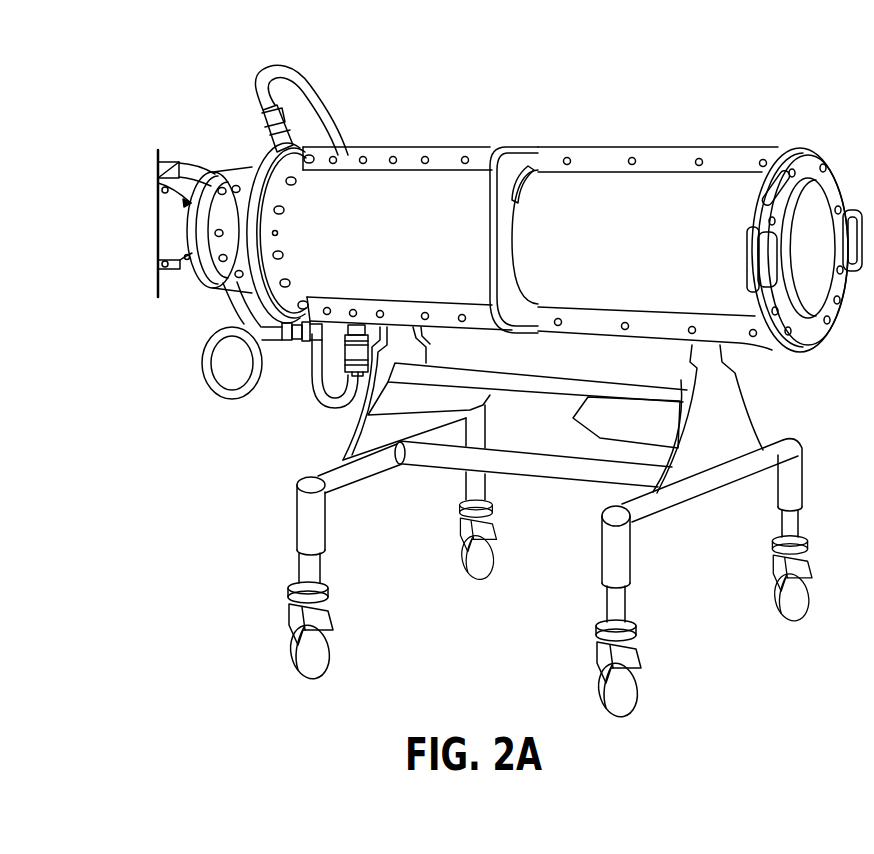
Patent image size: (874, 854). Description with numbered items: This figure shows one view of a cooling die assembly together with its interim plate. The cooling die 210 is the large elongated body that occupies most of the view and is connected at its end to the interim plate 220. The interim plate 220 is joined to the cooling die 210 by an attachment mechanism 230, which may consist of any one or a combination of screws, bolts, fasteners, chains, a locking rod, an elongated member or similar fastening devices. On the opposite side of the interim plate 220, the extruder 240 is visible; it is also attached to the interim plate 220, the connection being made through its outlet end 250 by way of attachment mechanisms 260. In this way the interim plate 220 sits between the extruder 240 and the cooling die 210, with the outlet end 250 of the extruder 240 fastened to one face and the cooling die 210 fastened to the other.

The cooling die 210 is at (692, 196).
The interim plate 220 is at (247, 192).
The attachment mechanism 230 is at (306, 181).
The extruder 240 is at (173, 220).
The outlet end 250 is at (172, 222).
The attachment mechanisms 260 is at (226, 179).